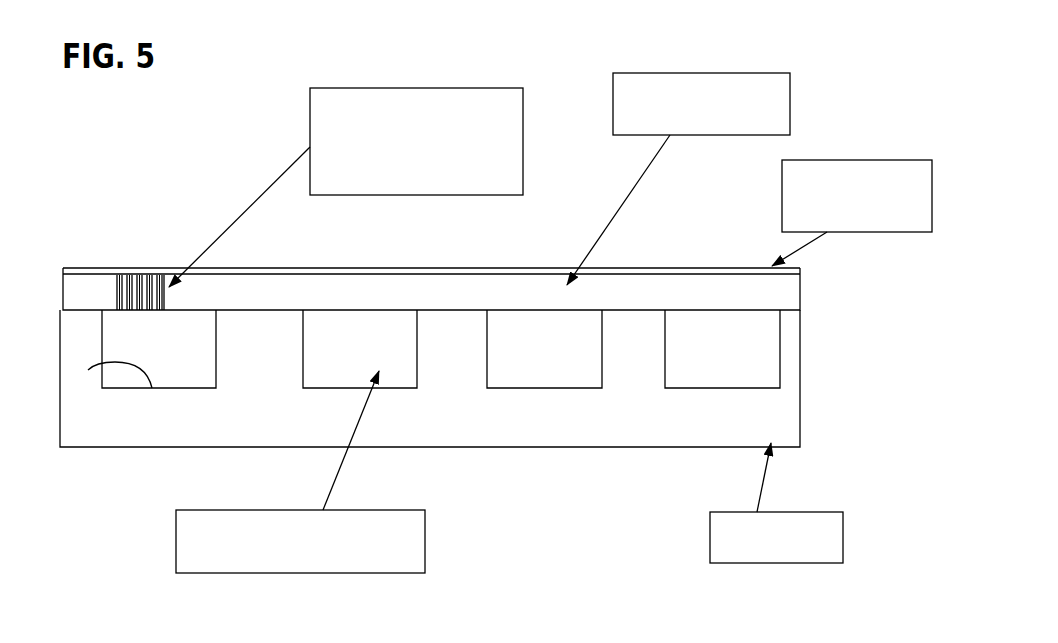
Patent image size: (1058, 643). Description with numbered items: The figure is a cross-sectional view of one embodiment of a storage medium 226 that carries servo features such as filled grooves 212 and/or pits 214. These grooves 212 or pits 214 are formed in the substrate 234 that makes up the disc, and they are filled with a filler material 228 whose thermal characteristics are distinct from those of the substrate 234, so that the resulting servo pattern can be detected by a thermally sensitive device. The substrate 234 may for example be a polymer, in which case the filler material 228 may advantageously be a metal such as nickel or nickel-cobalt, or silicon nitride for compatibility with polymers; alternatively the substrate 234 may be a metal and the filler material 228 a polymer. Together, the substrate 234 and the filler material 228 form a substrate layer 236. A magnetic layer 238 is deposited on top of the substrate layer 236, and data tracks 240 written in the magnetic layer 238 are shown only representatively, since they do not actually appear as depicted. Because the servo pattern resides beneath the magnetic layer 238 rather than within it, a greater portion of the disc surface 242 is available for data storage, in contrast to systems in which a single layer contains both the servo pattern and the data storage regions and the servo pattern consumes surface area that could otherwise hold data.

The storage medium 226 is at (73, 238).
The data tracks written on magnetic layer 240 is at (115, 290).
The disc surface 242 is at (380, 268).
The magnetic layer 238 is at (800, 295).
The substrate layer 236 is at (800, 365).
The filled grooves 212 is at (88, 370).
The substrate 234 is at (158, 447).
The filler material 228 is at (322, 388).
The pits 214 is at (433, 446).